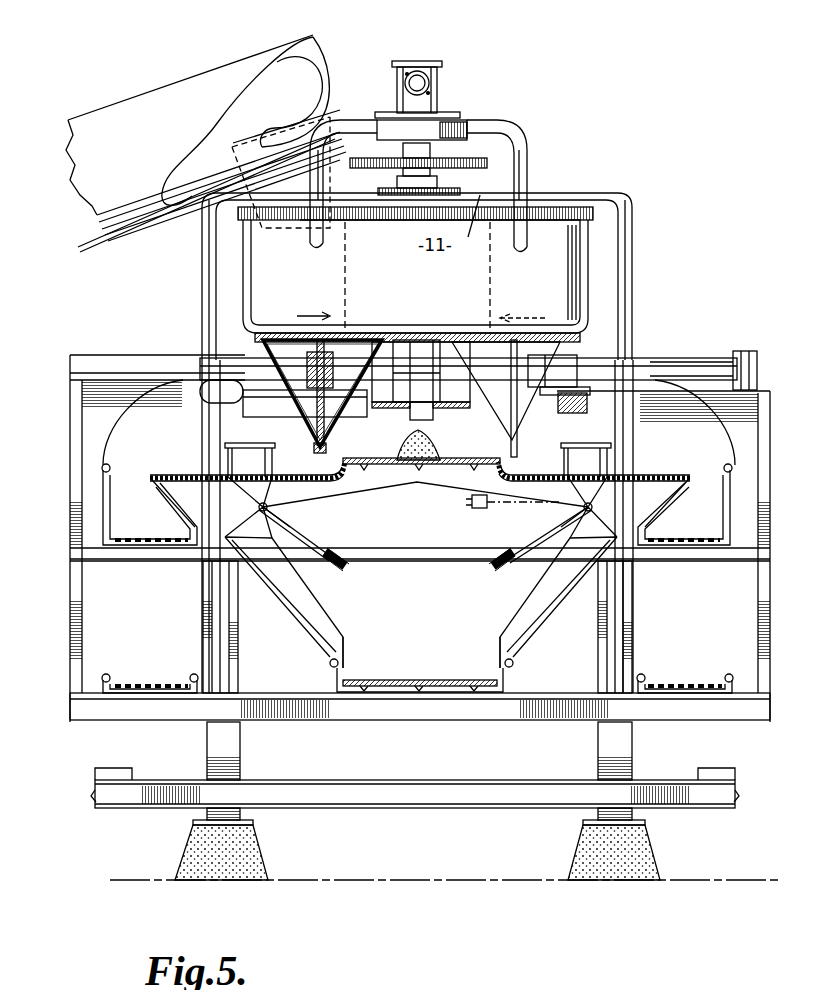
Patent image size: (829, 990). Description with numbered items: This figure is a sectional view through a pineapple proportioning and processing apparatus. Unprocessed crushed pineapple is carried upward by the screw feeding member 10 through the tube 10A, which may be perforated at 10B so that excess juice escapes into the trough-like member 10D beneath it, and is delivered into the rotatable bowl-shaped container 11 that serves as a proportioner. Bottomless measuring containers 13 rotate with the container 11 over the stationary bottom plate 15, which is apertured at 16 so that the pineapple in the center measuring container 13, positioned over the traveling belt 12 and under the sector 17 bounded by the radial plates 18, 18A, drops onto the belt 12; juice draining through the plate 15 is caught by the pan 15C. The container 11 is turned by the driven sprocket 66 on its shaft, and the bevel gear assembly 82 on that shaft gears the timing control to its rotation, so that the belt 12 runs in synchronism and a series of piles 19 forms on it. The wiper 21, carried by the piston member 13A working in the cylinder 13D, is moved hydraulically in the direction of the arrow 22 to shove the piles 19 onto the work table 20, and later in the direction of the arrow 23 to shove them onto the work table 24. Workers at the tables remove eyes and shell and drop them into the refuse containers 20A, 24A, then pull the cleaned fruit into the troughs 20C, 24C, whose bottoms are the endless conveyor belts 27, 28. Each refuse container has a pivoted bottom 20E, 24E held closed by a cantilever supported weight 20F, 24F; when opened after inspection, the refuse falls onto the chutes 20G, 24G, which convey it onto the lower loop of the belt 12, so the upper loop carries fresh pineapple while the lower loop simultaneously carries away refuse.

The screw feeding member 10 is at (272, 72).
The tube 10A is at (173, 92).
The perforations 10B is at (185, 186).
The trough-like member 10D is at (163, 218).
The bevel gear assembly 82 is at (440, 93).
The driven sprocket 66 is at (490, 163).
The sector 17 is at (481, 205).
The bowl-shaped container 11 is at (585, 268).
The radially extending vertically disposed plate 18 is at (348, 258).
The radially extending vertically disposed plate 18A is at (493, 264).
The arrow 22 is at (308, 316).
The arrow 23 is at (532, 318).
The measuring container 13 is at (258, 338).
The cylinder 13D is at (690, 365).
The piston member 13A is at (405, 368).
The wiper 21 is at (265, 374).
The aperture 16 is at (412, 418).
The pan 15C is at (378, 410).
The stationary bottom plate 15 is at (458, 410).
The pile 19 is at (412, 455).
The trough 24C is at (143, 470).
The trough 20C is at (709, 462).
The endless conveyor belt 28 is at (130, 538).
The endless conveyor belt 27 is at (688, 538).
The work table 24 is at (178, 476).
The work table 20 is at (638, 482).
The refuse container 24A is at (262, 458).
The refuse container 20A is at (607, 461).
The traveling belt 12 is at (470, 458).
The pivoted bottom 24E is at (276, 512).
The pivoted bottom 20E is at (572, 515).
The cantilever supported weight 24F is at (345, 575).
The cantilever supported weight 20F is at (505, 574).
The chute 24G is at (298, 622).
The chute 20G is at (522, 622).